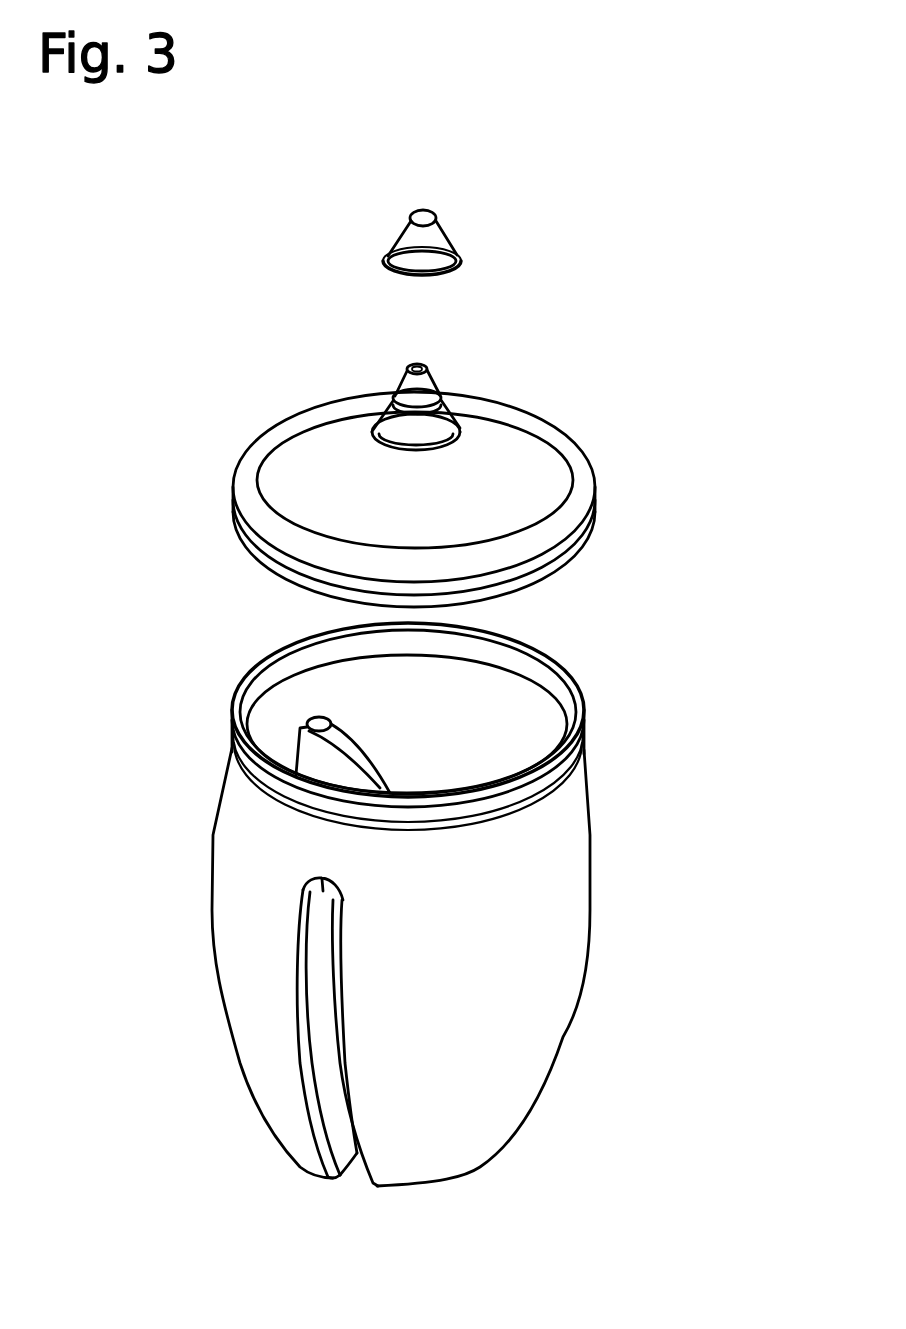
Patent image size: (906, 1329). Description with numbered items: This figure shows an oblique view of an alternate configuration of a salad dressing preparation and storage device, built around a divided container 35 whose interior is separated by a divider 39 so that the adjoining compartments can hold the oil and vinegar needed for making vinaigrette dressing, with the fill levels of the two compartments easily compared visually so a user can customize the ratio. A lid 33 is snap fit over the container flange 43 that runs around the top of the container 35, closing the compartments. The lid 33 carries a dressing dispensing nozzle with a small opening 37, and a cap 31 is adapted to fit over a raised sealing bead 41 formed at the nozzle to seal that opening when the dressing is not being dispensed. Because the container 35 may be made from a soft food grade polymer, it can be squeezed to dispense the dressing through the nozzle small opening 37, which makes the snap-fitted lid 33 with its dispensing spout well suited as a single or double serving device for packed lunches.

The cap 31 is at (461, 217).
The lid 33 is at (467, 443).
The divided container 35 is at (425, 888).
The dressing dispensing nozzle small opening 37 is at (408, 367).
The divider 39 is at (330, 747).
The raised sealing bead 41 is at (395, 395).
The container flange 43 is at (572, 746).